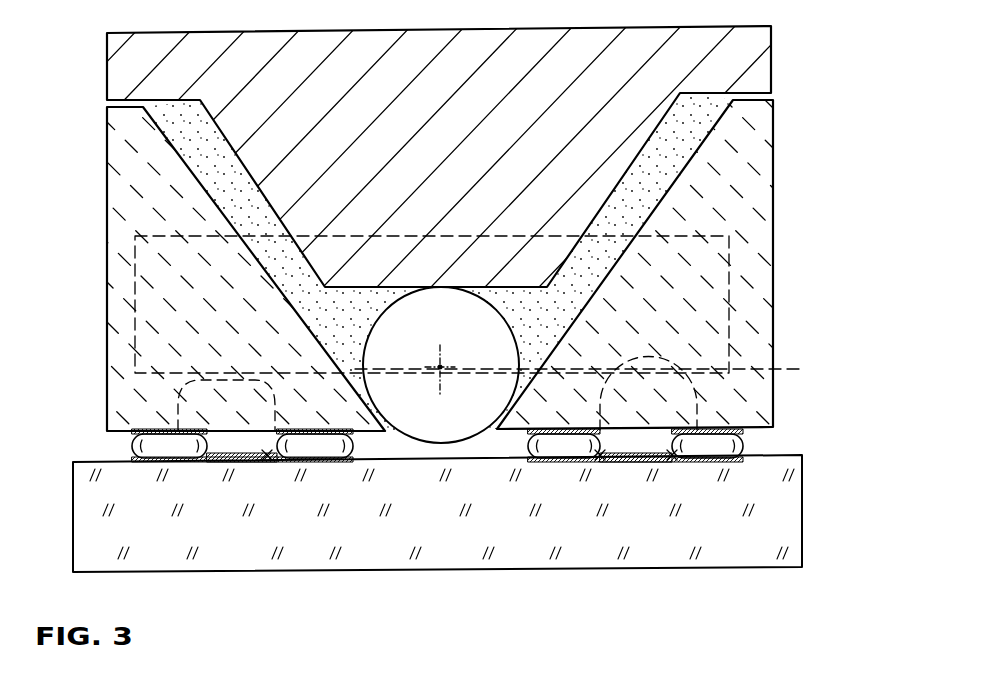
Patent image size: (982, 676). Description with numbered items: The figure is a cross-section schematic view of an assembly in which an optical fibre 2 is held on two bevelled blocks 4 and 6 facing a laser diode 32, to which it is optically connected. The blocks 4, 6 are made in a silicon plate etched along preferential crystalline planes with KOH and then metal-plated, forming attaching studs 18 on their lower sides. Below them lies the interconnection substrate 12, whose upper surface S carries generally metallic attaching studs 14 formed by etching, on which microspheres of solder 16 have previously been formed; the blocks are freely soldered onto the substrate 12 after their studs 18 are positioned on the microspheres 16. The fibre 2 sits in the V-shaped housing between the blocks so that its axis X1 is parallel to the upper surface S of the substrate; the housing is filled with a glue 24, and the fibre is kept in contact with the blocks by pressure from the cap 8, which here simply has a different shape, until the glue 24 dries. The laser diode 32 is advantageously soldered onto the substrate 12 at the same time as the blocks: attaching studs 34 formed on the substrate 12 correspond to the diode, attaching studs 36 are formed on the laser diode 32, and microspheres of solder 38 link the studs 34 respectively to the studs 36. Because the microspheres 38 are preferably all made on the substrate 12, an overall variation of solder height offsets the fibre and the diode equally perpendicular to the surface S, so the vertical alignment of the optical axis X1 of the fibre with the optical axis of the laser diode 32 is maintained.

The cap 8 is at (99, 68).
The bevelled block 4 is at (125, 168).
The bevelled block 6 is at (750, 193).
The glue 24 is at (697, 125).
The optical fibre 2 is at (376, 306).
The axis of the fibre X1 is at (440, 365).
The laser diode 32 is at (735, 286).
The attaching studs 36 is at (128, 346).
The attaching studs 18 is at (352, 428).
The microspheres of solder 16 is at (120, 458).
The attaching studs 14 is at (157, 463).
The attaching studs 34 is at (217, 463).
The microspheres of solder 38 is at (273, 461).
The interconnection substrate 12 is at (795, 513).
The upper surface S is at (86, 452).